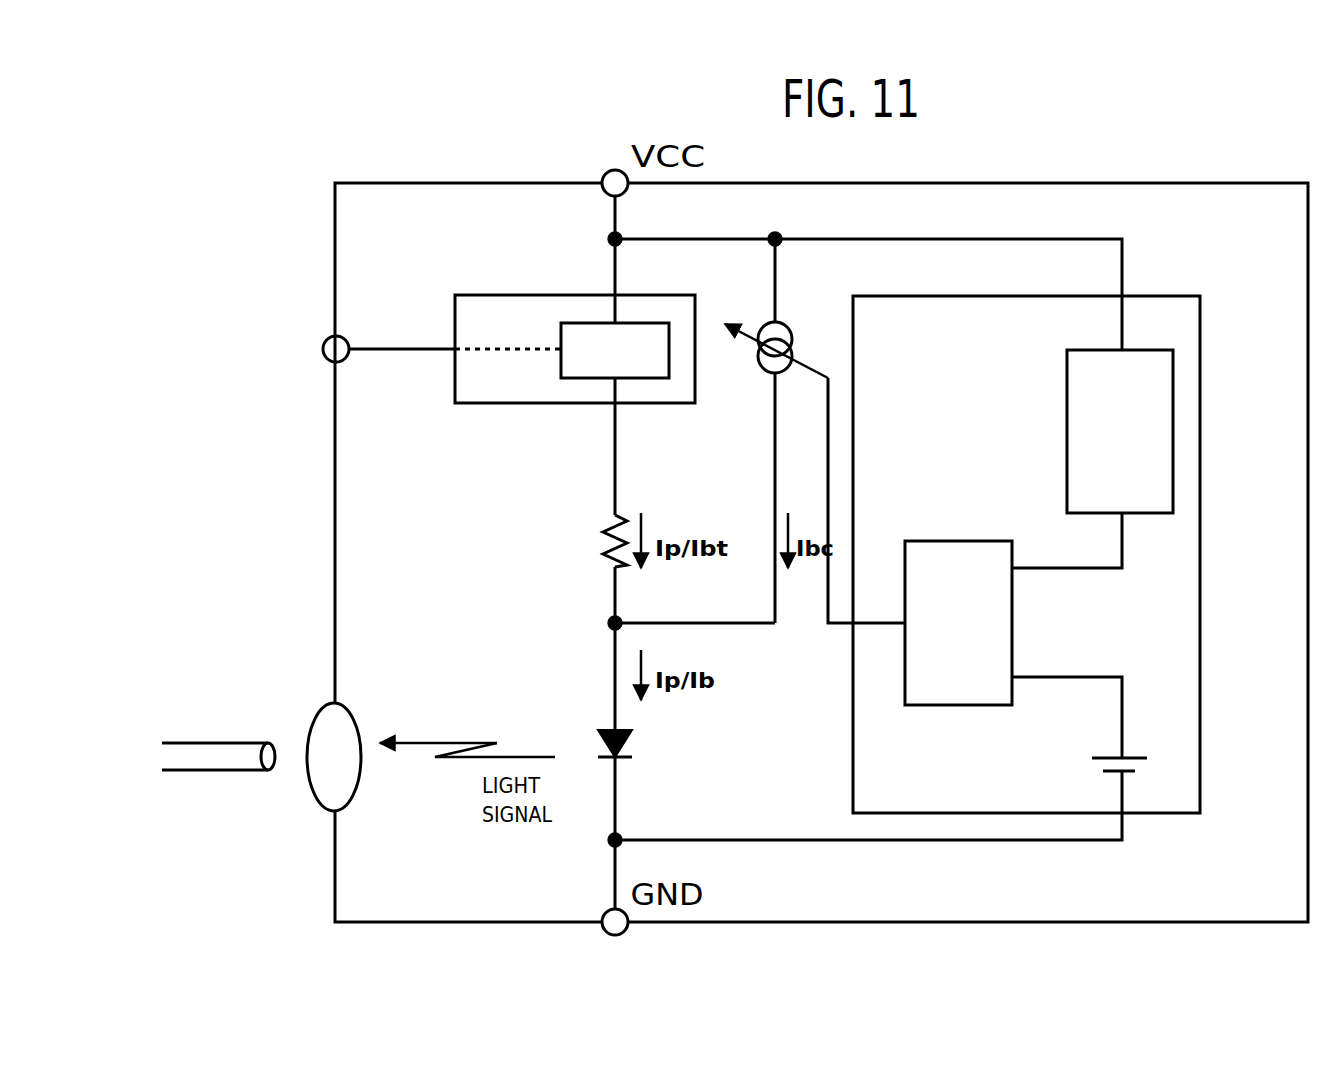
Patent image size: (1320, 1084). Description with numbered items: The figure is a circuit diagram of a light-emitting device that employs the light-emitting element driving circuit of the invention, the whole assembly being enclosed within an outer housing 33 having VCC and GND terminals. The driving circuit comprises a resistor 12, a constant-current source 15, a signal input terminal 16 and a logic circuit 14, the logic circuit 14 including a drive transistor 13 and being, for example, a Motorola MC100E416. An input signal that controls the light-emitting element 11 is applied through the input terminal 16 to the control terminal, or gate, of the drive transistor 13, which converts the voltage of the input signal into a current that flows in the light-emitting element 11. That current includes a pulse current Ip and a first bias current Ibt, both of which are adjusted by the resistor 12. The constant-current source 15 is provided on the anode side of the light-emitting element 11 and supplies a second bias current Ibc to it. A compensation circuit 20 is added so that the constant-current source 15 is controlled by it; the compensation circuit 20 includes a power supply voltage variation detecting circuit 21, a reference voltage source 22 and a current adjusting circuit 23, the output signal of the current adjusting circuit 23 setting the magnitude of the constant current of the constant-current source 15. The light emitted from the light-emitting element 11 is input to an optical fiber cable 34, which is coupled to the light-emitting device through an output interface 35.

The light-emitting element 11 is at (590, 726).
The resistor 12 is at (594, 540).
The drive transistor 13 is at (560, 379).
The logic circuit 14 is at (507, 291).
The constant-current source 15 is at (797, 314).
The signal input terminal 16 is at (320, 347).
The compensation circuit 20 is at (1200, 332).
The power supply voltage variation detecting circuit 21 is at (1149, 347).
The reference voltage source 22 is at (1149, 770).
The current adjusting circuit 23 is at (956, 709).
The housing 33 is at (795, 926).
The optical fiber cable 34 is at (201, 772).
The output interface 35 is at (296, 723).